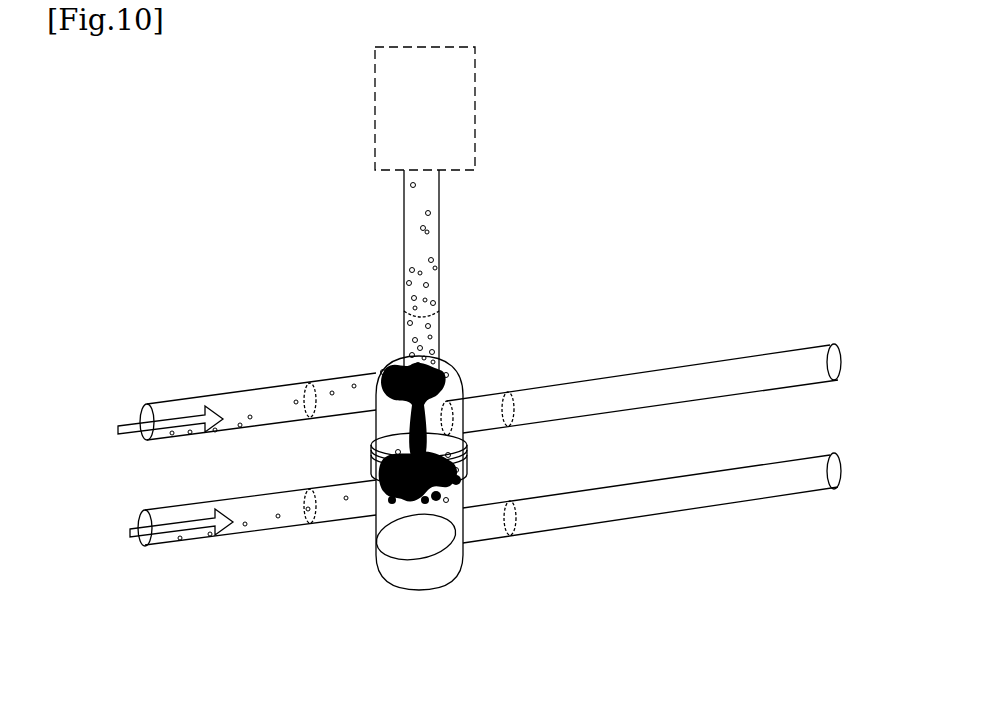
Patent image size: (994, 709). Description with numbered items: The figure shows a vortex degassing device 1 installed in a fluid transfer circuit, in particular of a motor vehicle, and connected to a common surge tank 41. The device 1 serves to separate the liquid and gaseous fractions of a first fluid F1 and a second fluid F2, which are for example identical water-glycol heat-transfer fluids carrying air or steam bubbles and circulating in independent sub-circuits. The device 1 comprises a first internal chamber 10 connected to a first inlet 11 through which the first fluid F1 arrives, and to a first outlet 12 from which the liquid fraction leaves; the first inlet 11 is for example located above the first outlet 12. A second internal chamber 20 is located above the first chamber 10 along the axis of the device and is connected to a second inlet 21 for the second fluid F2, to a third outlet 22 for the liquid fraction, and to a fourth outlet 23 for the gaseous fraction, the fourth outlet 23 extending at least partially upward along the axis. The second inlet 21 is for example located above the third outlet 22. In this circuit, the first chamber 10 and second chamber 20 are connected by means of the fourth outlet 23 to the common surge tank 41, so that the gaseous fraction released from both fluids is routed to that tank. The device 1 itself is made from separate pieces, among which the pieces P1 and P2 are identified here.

The vortex degassing device 1 is at (332, 285).
The first internal chamber 10 is at (440, 549).
The first inlet 11 is at (340, 512).
The first outlet 12 is at (484, 530).
The second internal chamber 20 is at (450, 420).
The second inlet 21 is at (348, 377).
The third outlet 22 is at (527, 419).
The fourth outlet 23 is at (438, 316).
The common surge tank 41 is at (475, 110).
The first fluid F1 is at (140, 524).
The second fluid F2 is at (142, 415).
The piece P1 is at (403, 565).
The piece P2 is at (470, 358).